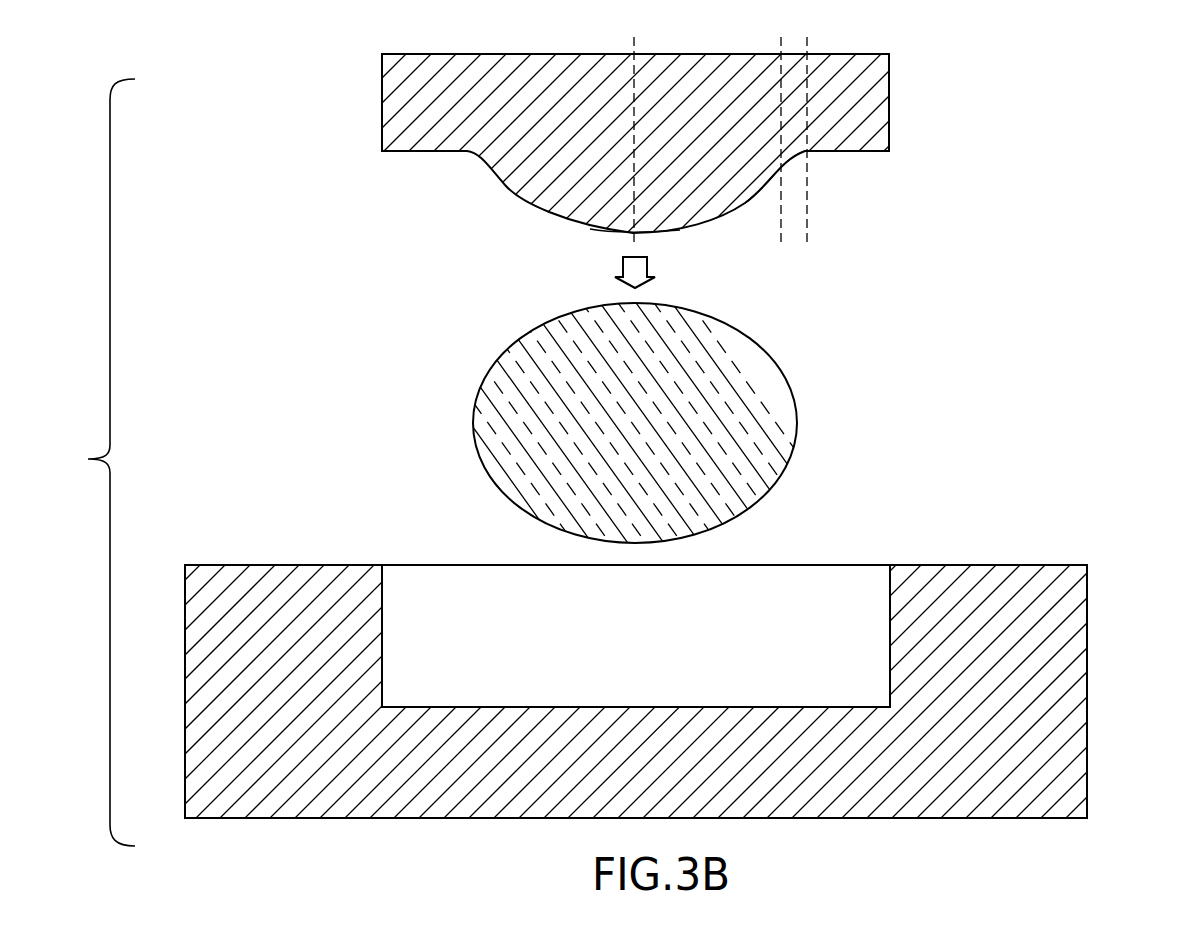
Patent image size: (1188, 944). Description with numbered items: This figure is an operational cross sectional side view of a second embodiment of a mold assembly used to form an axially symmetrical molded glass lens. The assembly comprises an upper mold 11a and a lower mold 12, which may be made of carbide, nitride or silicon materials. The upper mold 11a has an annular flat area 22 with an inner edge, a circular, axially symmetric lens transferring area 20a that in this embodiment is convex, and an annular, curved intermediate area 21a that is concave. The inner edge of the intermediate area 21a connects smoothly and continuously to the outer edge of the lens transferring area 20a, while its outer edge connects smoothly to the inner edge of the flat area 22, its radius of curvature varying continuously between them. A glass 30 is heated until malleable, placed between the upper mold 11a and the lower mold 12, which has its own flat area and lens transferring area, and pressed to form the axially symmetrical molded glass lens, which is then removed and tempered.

The upper mold 11a is at (889, 67).
The flat area 22 is at (849, 152).
The intermediate area 21a is at (793, 155).
The lens transferring area 20a is at (682, 229).
The glass 30 is at (797, 410).
The lower mold 12 is at (1025, 768).